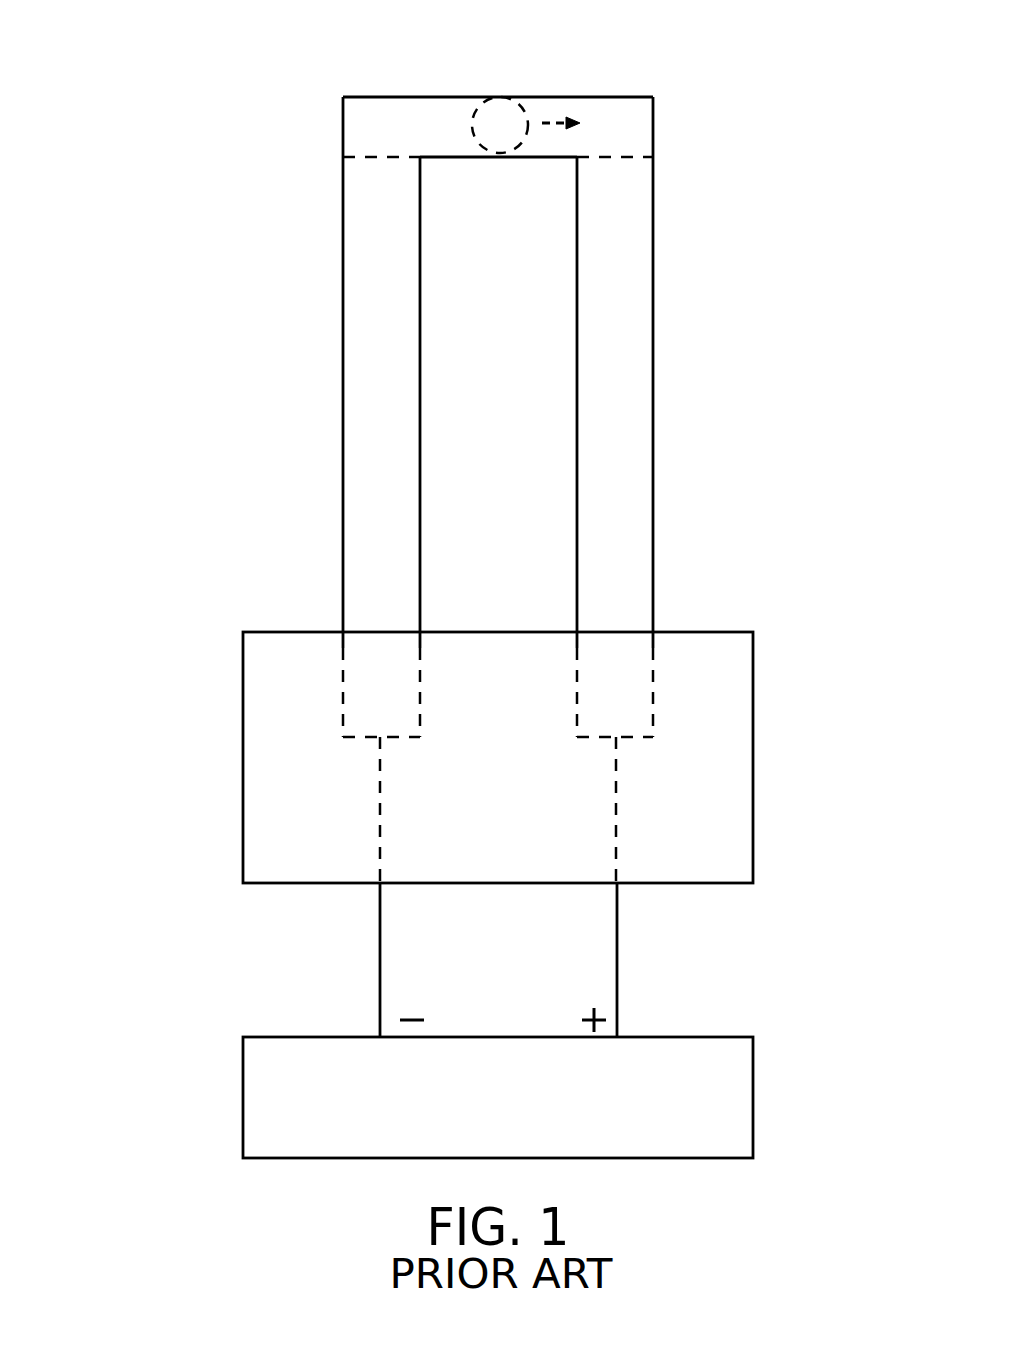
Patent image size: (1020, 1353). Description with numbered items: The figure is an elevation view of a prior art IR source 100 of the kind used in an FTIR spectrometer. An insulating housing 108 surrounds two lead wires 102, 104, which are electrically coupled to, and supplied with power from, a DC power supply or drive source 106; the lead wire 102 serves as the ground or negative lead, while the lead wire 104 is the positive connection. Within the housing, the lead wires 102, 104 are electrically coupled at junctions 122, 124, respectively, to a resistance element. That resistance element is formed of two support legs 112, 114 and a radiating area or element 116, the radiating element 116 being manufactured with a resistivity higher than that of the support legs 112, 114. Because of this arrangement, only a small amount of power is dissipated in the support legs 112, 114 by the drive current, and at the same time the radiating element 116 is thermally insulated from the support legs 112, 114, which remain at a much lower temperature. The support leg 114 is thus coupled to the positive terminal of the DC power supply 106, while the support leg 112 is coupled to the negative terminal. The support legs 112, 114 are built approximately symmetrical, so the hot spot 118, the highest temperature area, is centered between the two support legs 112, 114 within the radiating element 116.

The prior art IR source 100 is at (166, 130).
The lead wire 102 is at (380, 968).
The lead wire 104 is at (617, 968).
The DC power supply 106 is at (243, 1098).
The insulating housing 108 is at (243, 732).
The support leg 112 is at (343, 433).
The support leg 114 is at (653, 433).
The radiating element 116 is at (425, 106).
The hot spot 118 is at (523, 107).
The junction 122 is at (380, 740).
The junction 124 is at (616, 740).